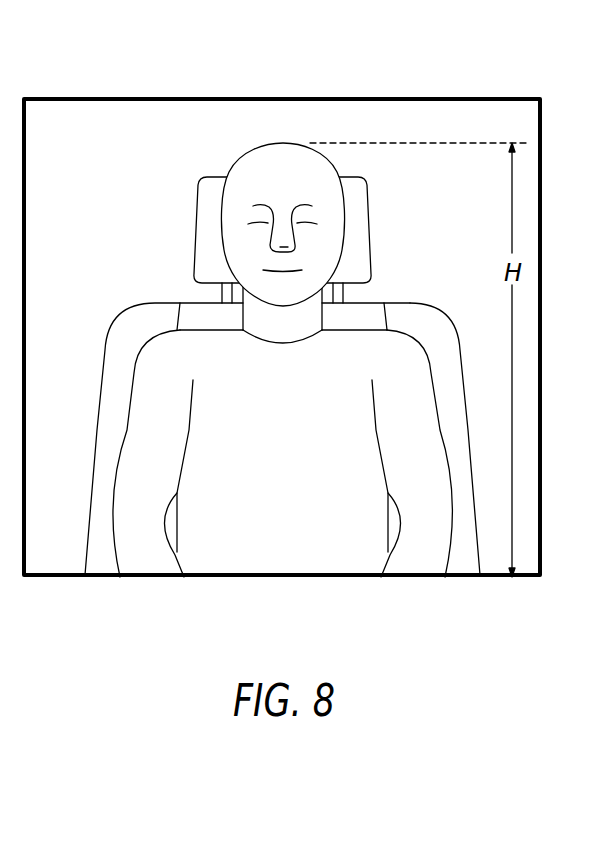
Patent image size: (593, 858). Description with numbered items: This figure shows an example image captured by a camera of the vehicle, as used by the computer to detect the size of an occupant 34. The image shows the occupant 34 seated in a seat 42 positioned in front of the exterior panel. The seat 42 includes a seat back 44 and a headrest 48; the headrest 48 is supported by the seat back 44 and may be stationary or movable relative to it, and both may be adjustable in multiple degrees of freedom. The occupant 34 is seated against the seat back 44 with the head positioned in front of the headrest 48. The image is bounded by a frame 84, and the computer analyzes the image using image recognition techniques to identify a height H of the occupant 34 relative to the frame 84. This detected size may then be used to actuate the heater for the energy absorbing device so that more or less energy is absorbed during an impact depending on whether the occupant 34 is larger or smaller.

The frame 84 is at (113, 97).
The headrest 48 is at (210, 208).
The occupant 34 is at (173, 368).
The seat back 44 is at (118, 395).
The seat 42 is at (470, 410).